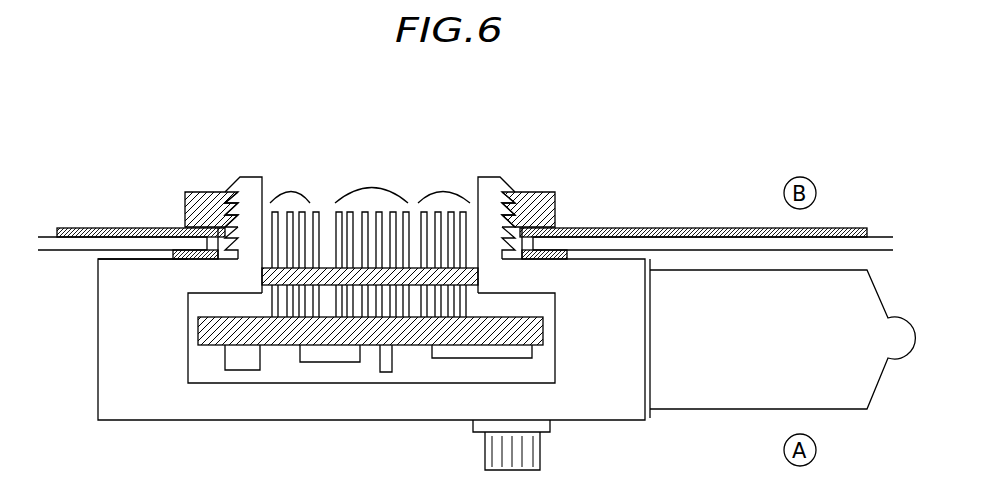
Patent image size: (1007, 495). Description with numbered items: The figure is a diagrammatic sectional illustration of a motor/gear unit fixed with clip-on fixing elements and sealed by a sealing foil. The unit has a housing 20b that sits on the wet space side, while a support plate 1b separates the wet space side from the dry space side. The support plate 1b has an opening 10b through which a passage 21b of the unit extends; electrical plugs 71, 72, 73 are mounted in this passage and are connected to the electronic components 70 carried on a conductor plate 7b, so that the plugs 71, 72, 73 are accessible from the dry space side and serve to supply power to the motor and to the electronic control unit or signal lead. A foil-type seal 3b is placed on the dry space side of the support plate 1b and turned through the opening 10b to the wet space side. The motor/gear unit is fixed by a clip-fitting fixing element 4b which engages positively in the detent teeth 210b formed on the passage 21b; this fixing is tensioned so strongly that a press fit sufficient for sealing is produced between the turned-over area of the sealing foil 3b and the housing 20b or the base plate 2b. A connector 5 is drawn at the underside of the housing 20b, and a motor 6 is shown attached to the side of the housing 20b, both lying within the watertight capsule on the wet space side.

The support plate 1b is at (70, 243).
The base plate 2b is at (138, 275).
The foil-type seal 3b is at (135, 233).
The clip-fitting fixing element 4b is at (203, 207).
The connector 5 is at (500, 455).
The motor 6 is at (757, 380).
The circuit board 7b is at (213, 338).
The opening 10b is at (474, 198).
The housing 20b is at (137, 403).
The passage 21b is at (250, 247).
The electronic components 70 is at (478, 352).
The electrical plug 71 is at (292, 190).
The electrical plug 72 is at (372, 186).
The electrical plug 73 is at (442, 193).
The detent teeth 210b is at (224, 165).